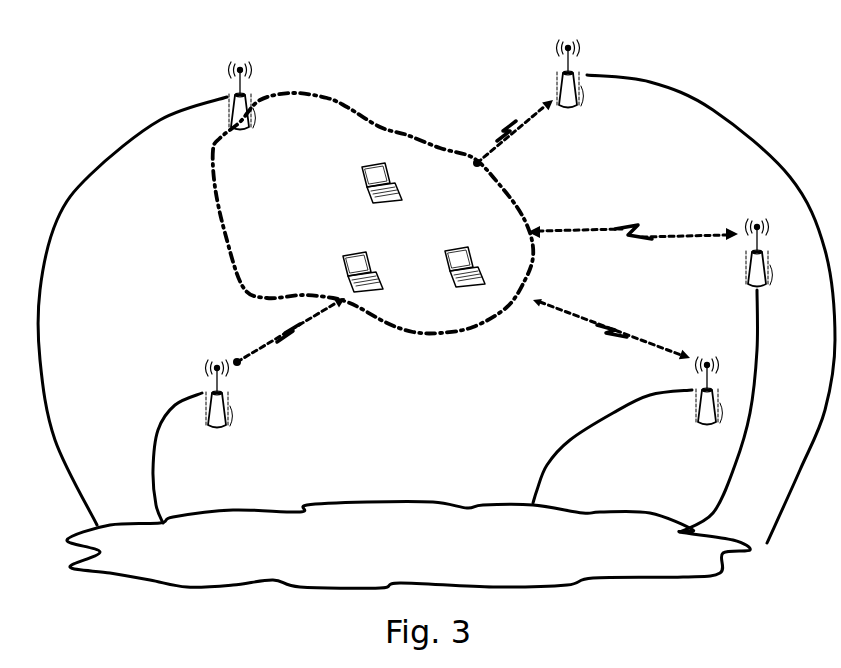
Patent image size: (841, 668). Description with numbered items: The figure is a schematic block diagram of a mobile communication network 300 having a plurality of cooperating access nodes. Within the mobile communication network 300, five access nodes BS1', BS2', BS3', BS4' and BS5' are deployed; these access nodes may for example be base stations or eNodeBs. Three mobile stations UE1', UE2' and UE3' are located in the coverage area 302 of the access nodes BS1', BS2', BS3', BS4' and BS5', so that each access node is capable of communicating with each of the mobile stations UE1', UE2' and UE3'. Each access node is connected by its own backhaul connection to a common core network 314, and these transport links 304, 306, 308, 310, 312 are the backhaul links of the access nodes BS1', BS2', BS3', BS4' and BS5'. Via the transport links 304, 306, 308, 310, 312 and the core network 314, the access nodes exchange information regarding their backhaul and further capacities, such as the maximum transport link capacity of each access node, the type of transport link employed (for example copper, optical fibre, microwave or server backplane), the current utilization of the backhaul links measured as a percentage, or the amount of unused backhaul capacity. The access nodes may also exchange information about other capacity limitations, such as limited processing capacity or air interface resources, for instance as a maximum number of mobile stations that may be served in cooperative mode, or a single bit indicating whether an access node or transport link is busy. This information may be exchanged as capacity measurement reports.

The mobile communication network 300 is at (105, 118).
The coverage area 302 is at (373, 213).
The transport link 304 is at (167, 458).
The transport link 306 is at (132, 311).
The transport link 308 is at (711, 309).
The transport link 310 is at (739, 411).
The transport link 312 is at (612, 446).
The core network 314 is at (408, 544).
The access node BS1' is at (243, 394).
The access node BS2' is at (246, 84).
The access node BS3' is at (595, 63).
The access node BS4' is at (739, 241).
The access node BS5' is at (696, 405).
The mobile station UE1' is at (467, 255).
The mobile station UE2' is at (355, 183).
The mobile station UE3' is at (340, 270).